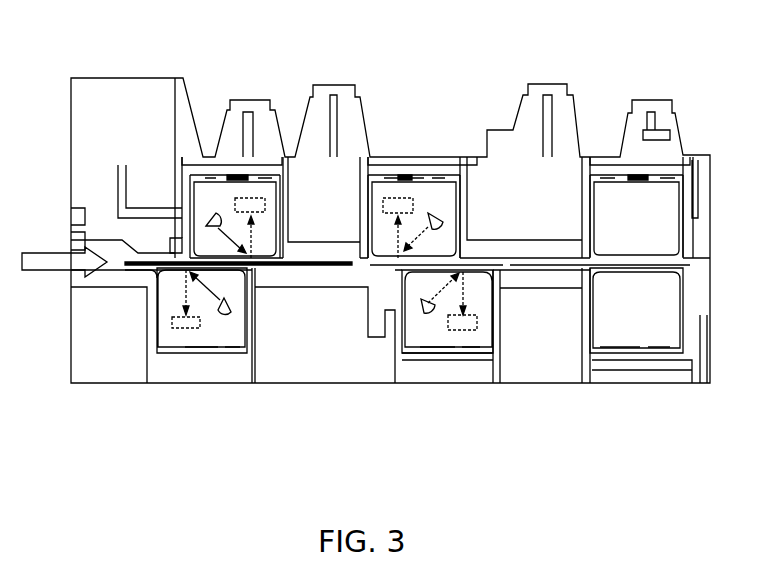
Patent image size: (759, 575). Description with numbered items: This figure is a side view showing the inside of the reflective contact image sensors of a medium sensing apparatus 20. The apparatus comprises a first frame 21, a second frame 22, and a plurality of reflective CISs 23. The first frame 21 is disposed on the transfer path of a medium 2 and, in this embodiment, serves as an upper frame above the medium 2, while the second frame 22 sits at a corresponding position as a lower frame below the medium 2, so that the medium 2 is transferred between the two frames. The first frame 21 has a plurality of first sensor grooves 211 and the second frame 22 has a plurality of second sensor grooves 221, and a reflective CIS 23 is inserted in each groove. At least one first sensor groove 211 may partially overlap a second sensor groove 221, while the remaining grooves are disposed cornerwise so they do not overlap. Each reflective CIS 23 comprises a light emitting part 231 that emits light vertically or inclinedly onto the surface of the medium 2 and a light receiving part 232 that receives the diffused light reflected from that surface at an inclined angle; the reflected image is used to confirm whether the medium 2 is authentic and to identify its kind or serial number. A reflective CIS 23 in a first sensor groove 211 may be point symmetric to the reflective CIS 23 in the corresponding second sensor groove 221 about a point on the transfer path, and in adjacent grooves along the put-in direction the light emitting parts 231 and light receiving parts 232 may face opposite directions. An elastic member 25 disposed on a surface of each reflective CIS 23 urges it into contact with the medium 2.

The medium 2 is at (270, 266).
The medium sensing apparatus 20 is at (646, 43).
The first frame 21 is at (155, 100).
The first sensor groove 211 is at (388, 160).
The second frame 22 is at (128, 355).
The second sensor groove 221 is at (483, 354).
The reflective CIS 23 is at (438, 207).
The light emitting part 231 is at (221, 315).
The light receiving part 232 is at (177, 330).
The elastic member 25 is at (243, 172).